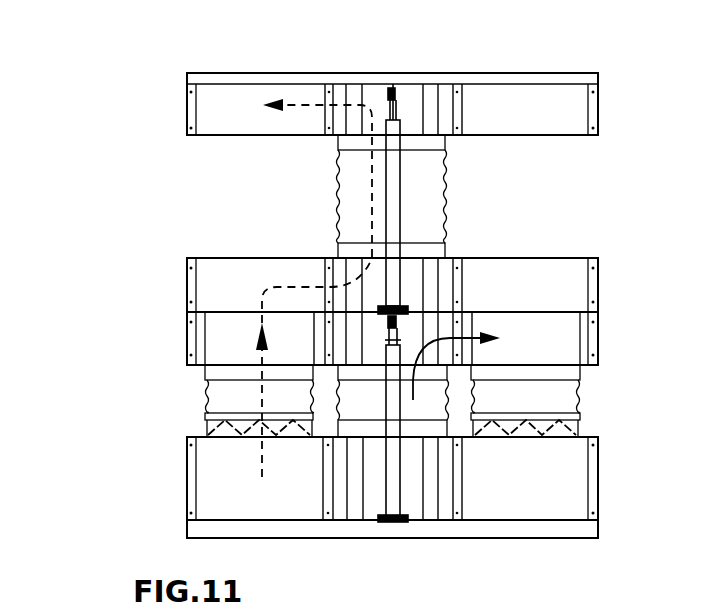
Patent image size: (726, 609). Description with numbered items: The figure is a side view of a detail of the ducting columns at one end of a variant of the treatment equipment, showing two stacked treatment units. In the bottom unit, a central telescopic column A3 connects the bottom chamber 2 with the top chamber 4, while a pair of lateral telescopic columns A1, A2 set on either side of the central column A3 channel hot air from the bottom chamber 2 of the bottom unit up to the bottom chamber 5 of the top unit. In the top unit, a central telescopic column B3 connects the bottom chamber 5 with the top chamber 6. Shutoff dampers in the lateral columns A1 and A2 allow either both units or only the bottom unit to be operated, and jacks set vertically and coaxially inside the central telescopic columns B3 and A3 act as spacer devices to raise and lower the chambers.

The bottom chamber 2 is at (582, 508).
The top chamber 4 is at (202, 343).
The bottom chamber 5 is at (207, 285).
The top chamber 6 is at (207, 102).
The lateral telescopic column A1 is at (222, 400).
The lateral telescopic column A2 is at (567, 397).
The central telescopic column A3 is at (435, 400).
The central telescopic column B3 is at (357, 197).